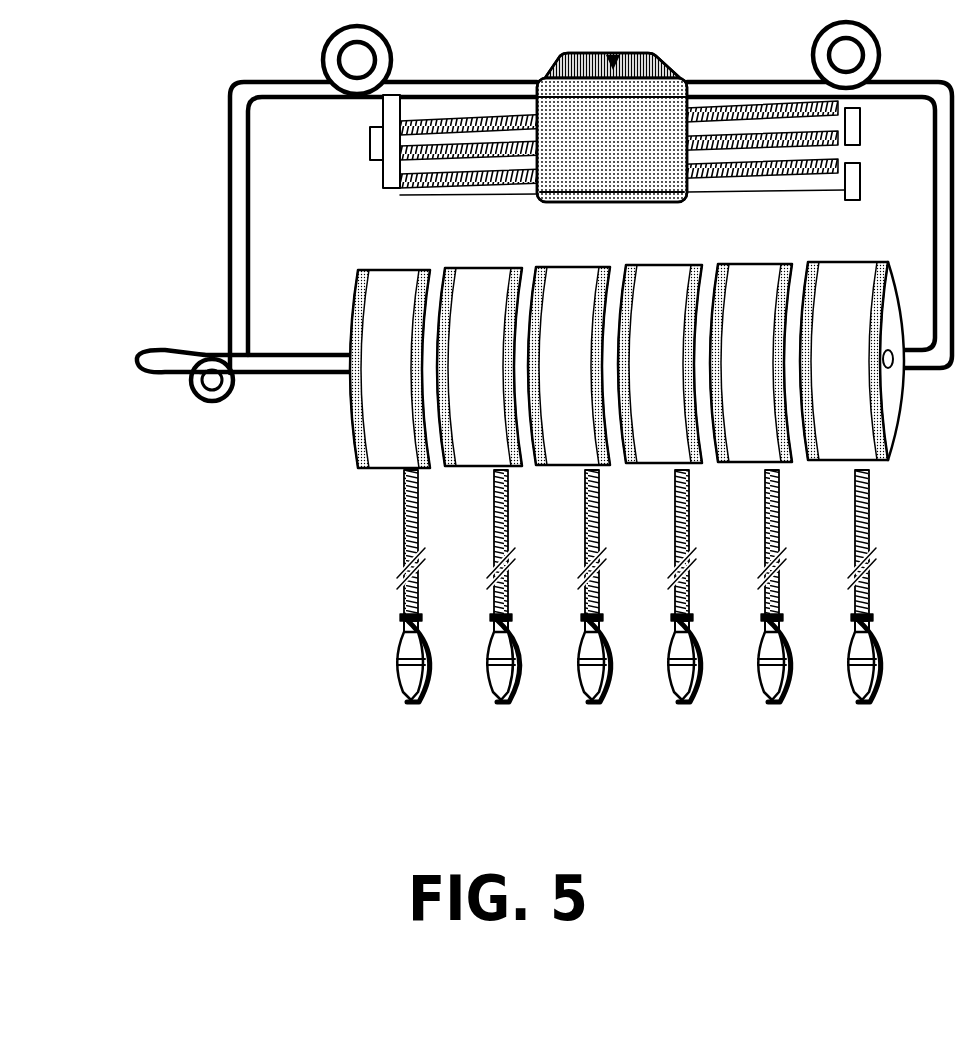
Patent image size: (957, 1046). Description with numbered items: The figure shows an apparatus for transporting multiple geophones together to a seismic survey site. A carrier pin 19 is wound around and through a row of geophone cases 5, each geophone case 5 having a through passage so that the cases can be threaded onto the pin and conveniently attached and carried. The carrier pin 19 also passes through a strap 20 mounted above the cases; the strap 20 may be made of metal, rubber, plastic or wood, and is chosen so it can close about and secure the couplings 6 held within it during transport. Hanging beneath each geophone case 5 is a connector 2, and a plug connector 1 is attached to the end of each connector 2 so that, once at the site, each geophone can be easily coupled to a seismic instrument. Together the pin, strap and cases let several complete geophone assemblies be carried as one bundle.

The plug connector 1 is at (395, 651).
The connector 2 is at (402, 530).
The geophone case 5 is at (338, 440).
The coupling 6 is at (382, 168).
The carrier pin 19 is at (228, 145).
The strap 20 is at (540, 67).